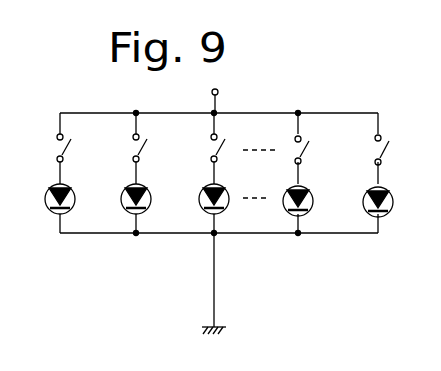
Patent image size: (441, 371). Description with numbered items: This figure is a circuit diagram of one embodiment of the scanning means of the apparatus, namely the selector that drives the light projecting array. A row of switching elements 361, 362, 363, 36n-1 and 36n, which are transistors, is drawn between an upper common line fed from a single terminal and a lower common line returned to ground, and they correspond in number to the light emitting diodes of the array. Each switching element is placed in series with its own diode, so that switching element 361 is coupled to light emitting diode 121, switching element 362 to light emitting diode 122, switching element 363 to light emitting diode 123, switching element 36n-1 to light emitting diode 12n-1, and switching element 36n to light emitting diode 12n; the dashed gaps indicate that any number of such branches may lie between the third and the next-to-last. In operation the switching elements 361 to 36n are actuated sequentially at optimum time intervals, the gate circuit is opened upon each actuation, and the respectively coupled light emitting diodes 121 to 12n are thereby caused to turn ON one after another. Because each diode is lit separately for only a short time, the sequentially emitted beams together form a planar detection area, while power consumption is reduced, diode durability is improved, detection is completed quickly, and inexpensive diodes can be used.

The switching element 361 is at (80, 143).
The switching element 362 is at (157, 143).
The switching element 363 is at (236, 141).
The switching element 36n-1 is at (331, 146).
The switching element 36n is at (405, 146).
The light emitting diode 121 is at (75, 205).
The light emitting diode 122 is at (152, 205).
The light emitting diode 123 is at (230, 208).
The light emitting diode 12n-1 is at (325, 209).
The light emitting diode 12n is at (399, 210).